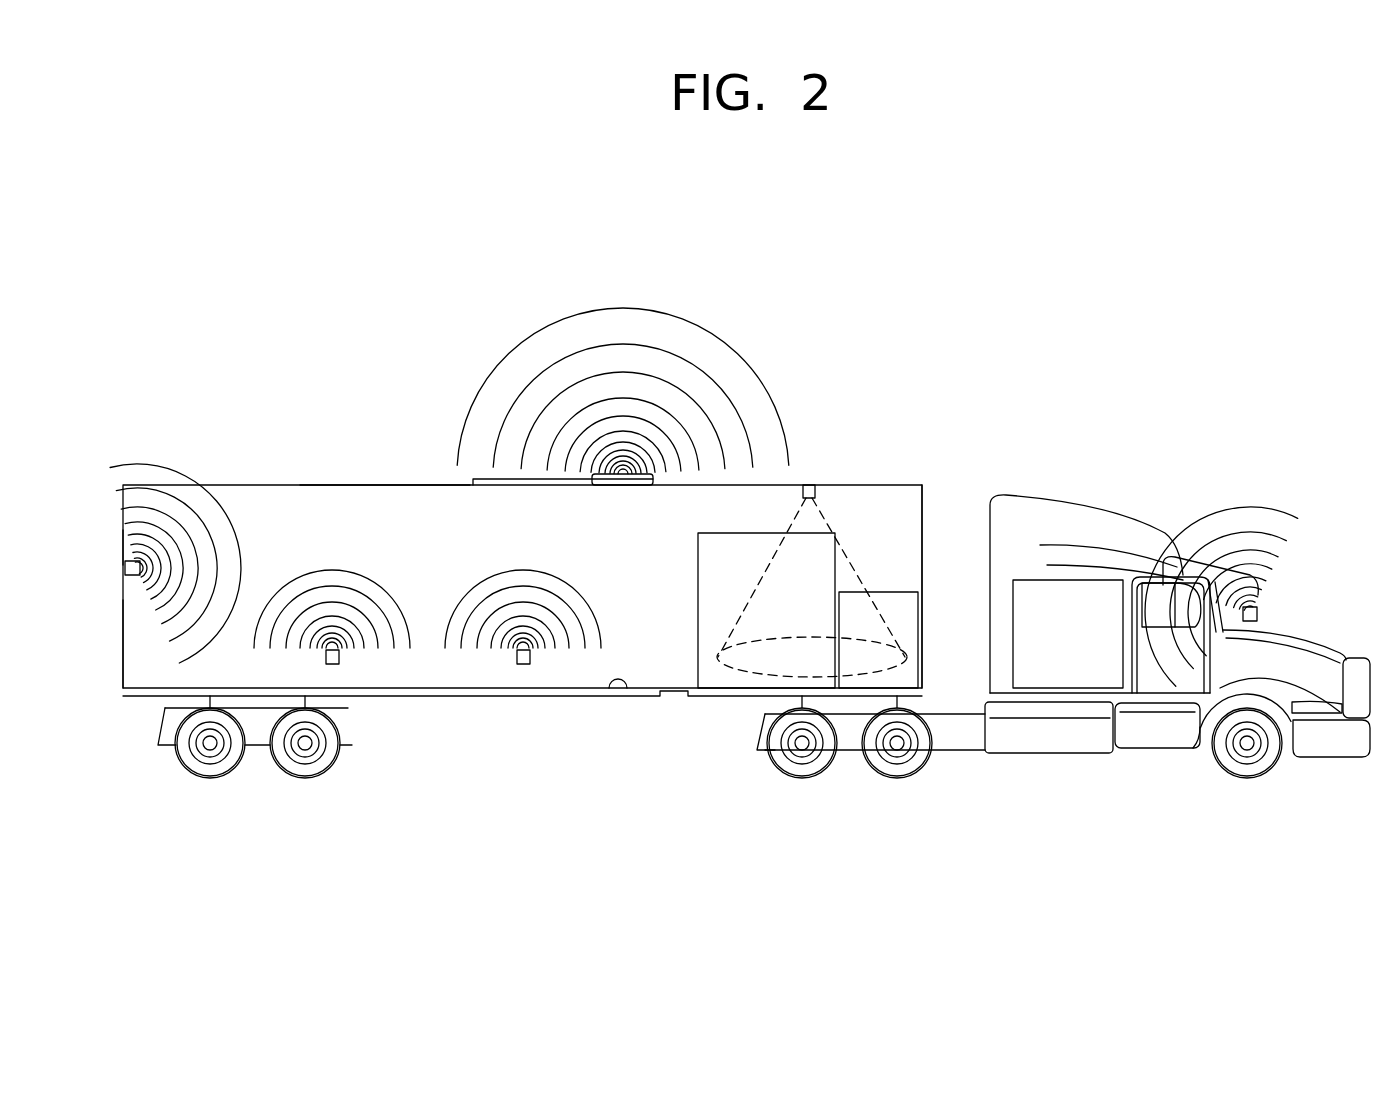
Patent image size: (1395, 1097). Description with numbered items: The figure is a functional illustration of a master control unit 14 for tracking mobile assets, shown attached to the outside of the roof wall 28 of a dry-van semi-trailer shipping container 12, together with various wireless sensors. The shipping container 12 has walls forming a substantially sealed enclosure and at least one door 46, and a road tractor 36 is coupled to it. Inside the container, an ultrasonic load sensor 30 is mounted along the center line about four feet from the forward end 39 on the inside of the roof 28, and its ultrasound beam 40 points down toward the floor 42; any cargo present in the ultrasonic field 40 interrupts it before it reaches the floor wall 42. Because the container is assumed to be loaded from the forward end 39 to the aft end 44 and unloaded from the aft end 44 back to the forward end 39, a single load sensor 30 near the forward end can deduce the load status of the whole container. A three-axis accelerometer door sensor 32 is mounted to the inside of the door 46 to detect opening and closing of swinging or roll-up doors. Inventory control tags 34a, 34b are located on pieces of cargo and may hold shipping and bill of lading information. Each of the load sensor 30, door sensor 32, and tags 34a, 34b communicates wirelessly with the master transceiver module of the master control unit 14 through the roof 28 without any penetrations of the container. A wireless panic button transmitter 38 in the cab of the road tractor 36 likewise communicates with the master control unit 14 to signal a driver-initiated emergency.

The dry-van semi-trailer shipping container 12 is at (447, 697).
The master control unit 14 is at (645, 468).
The roof wall 28 is at (390, 484).
The ultrasonic load sensor 30 is at (810, 484).
The three-axis accelerometer door sensor 32 is at (140, 567).
The inventory control tag 34a is at (333, 665).
The inventory control tag 34b is at (527, 665).
The road tractor 36 is at (1037, 737).
The panic button transmitter 38 is at (1263, 618).
The forward end 39 is at (923, 517).
The ultrasound beam 40 is at (845, 548).
The floor 42 is at (624, 694).
The aft end 44 is at (123, 640).
The door 46 is at (123, 543).